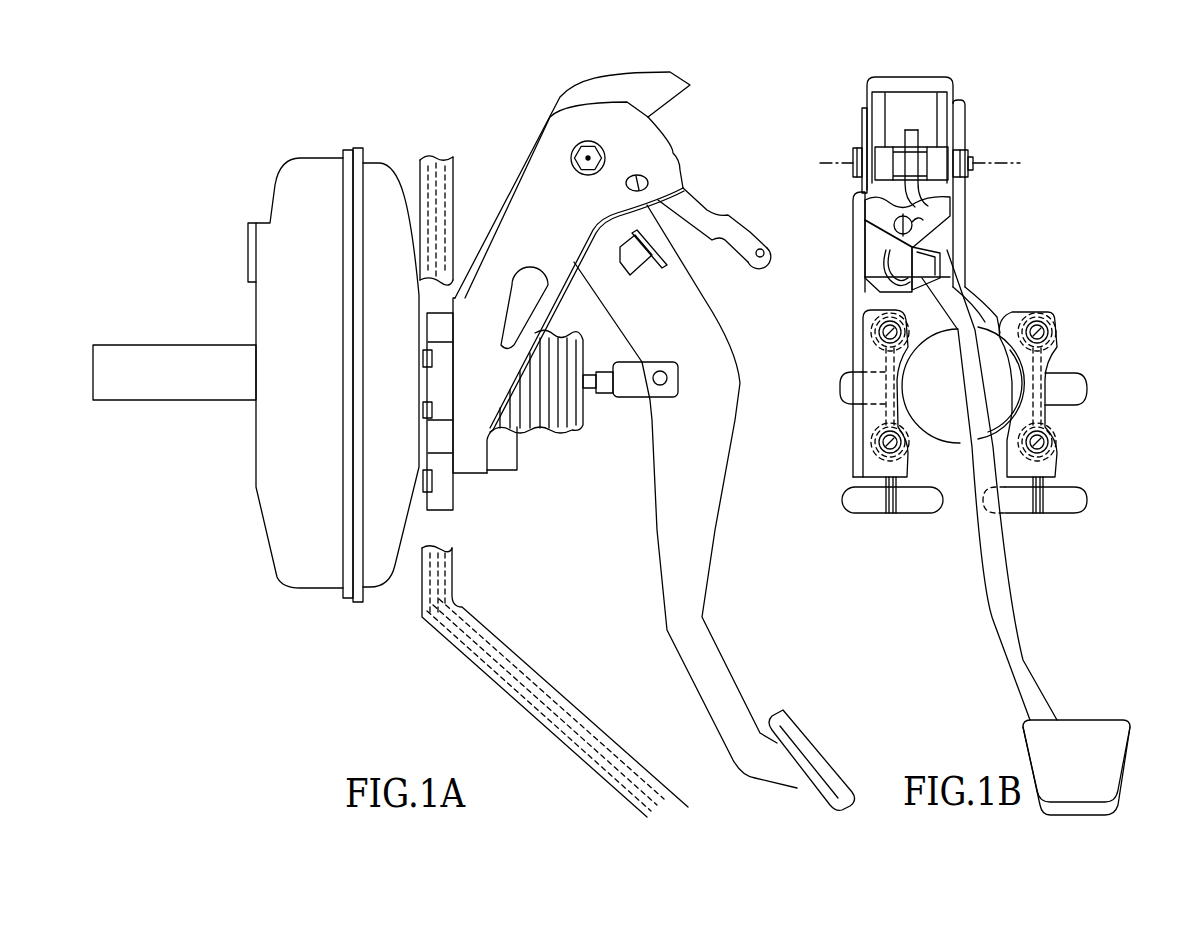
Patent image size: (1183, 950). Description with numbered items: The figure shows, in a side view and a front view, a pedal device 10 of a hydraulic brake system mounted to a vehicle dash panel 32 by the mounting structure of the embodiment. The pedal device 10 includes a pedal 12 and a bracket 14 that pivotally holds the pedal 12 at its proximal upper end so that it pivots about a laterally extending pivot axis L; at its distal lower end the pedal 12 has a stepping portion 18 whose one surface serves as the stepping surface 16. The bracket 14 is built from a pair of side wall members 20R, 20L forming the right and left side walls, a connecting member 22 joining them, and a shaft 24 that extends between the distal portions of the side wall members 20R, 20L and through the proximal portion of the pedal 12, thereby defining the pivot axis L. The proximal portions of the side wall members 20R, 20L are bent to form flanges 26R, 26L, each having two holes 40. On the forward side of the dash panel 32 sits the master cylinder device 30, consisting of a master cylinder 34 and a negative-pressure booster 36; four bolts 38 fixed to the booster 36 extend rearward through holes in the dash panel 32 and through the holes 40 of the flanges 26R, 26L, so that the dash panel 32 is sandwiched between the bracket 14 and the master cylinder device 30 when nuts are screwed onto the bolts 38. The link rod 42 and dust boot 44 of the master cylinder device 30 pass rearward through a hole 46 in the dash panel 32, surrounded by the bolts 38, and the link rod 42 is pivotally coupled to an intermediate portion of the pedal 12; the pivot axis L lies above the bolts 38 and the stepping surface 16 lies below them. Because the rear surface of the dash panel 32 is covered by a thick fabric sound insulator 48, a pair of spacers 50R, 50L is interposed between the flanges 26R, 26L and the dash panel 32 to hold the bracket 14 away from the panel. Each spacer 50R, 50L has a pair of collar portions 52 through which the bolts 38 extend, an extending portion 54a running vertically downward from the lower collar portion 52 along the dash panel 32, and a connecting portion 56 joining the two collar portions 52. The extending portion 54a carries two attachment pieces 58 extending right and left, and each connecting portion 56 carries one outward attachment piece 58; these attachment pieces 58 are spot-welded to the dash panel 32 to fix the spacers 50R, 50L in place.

In FIG. 1A, the pedal device 10 is at (523, 94).
In FIG. 1B, the pedal device 10 is at (1053, 86).
In FIG. 1A, the pedal 12 is at (700, 552).
In FIG. 1B, the pedal 12 is at (1005, 585).
In FIG. 1A, the bracket 14 is at (514, 124).
In FIG. 1B, the bracket 14 is at (847, 101).
In FIG. 1A, the stepping surface 16 is at (810, 725).
In FIG. 1B, the stepping surface 16 is at (1103, 740).
In FIG. 1A, the stepping portion 18 is at (845, 798).
In FIG. 1B, the stepping portion 18 is at (1120, 795).
In FIG. 1A, the left side wall member 20L is at (668, 172).
In FIG. 1B, the left side wall member 20L is at (858, 240).
In FIG. 1A, the right side wall member 20R is at (512, 450).
In FIG. 1B, the right side wall member 20R is at (960, 235).
In FIG. 1A, the connecting member 22 is at (603, 92).
In FIG. 1B, the connecting member 22 is at (920, 84).
In FIG. 1A, the shaft 24 is at (600, 152).
In FIG. 1B, the shaft 24 is at (852, 155).
In FIG. 1A, the pivot axis L is at (590, 158).
In FIG. 1B, the pivot axis L is at (1005, 163).
In FIG. 1B, the left flange 26L is at (870, 360).
In FIG. 1B, the right flange 26R is at (1010, 310).
In FIG. 1A, the master cylinder device 30 is at (182, 96).
In FIG. 1A, the dash panel 32 is at (445, 640).
In FIG. 1A, the master cylinder 34 is at (143, 350).
In FIG. 1A, the negative-pressure booster 36 is at (300, 168).
In FIG. 1B, the bolt 38 is at (880, 325).
In FIG. 1B, the hole 40 is at (880, 340).
In FIG. 1A, the link rod 42 is at (605, 395).
In FIG. 1A, the dust boot 44 is at (575, 415).
In FIG. 1B, the hole 46 is at (1010, 315).
In FIG. 1A, the sound insulator 48 is at (577, 712).
In FIG. 1A, the left spacer 50L is at (457, 528).
In FIG. 1B, the left spacer 50L is at (868, 538).
In FIG. 1B, the right spacer 50R is at (1077, 528).
In FIG. 1A, the collar portion 52 is at (447, 333).
In FIG. 1B, the collar portion 52 is at (920, 345).
In FIG. 1A, the extending portion 54a is at (455, 496).
In FIG. 1B, the extending portion 54a is at (895, 500).
In FIG. 1A, the connecting portion 56 is at (447, 378).
In FIG. 1B, the connecting portion 56 is at (895, 395).
In FIG. 1A, the attachment piece 58 is at (422, 383).
In FIG. 1B, the attachment piece 58 is at (843, 395).